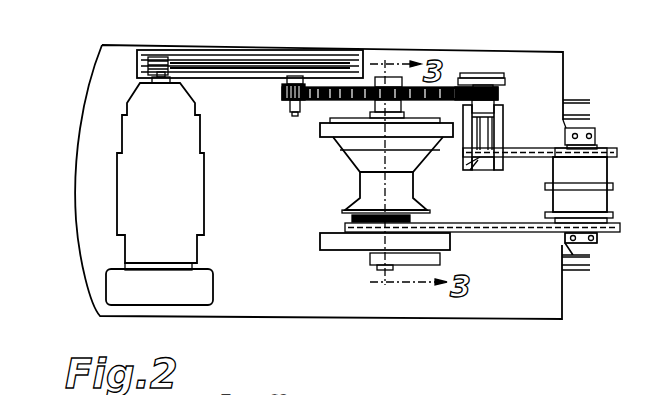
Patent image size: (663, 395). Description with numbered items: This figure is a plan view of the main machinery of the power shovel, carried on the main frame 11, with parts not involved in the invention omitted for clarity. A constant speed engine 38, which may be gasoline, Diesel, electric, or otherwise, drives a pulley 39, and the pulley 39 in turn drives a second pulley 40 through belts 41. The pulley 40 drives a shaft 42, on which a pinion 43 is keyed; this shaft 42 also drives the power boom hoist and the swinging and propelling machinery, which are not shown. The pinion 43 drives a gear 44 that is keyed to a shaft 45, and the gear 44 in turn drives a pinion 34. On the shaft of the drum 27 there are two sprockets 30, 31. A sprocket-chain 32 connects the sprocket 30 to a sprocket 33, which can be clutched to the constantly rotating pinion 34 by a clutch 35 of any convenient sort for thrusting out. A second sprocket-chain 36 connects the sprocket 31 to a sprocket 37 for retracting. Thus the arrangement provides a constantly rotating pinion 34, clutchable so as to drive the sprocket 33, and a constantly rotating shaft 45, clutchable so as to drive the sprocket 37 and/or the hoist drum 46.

The main frame 11 is at (547, 304).
The drum 27 is at (590, 198).
The sprocket 30 is at (583, 162).
The sprocket 31 is at (598, 235).
The sprocket-chain 32 is at (525, 158).
The sprocket 33 is at (487, 157).
The pinion 34 is at (498, 95).
The clutch 35 is at (483, 78).
The sprocket-chain 36 is at (482, 232).
The sprocket 37 is at (370, 235).
The constant speed engine 38 is at (135, 100).
The pulley 39 is at (163, 57).
The pulley 40 is at (273, 50).
The belts 41 is at (207, 63).
The shaft 42 is at (287, 112).
The pinion 43 is at (285, 92).
The gear 44 is at (320, 100).
The shaft 45 is at (375, 102).
The hoist drum 46 is at (368, 183).